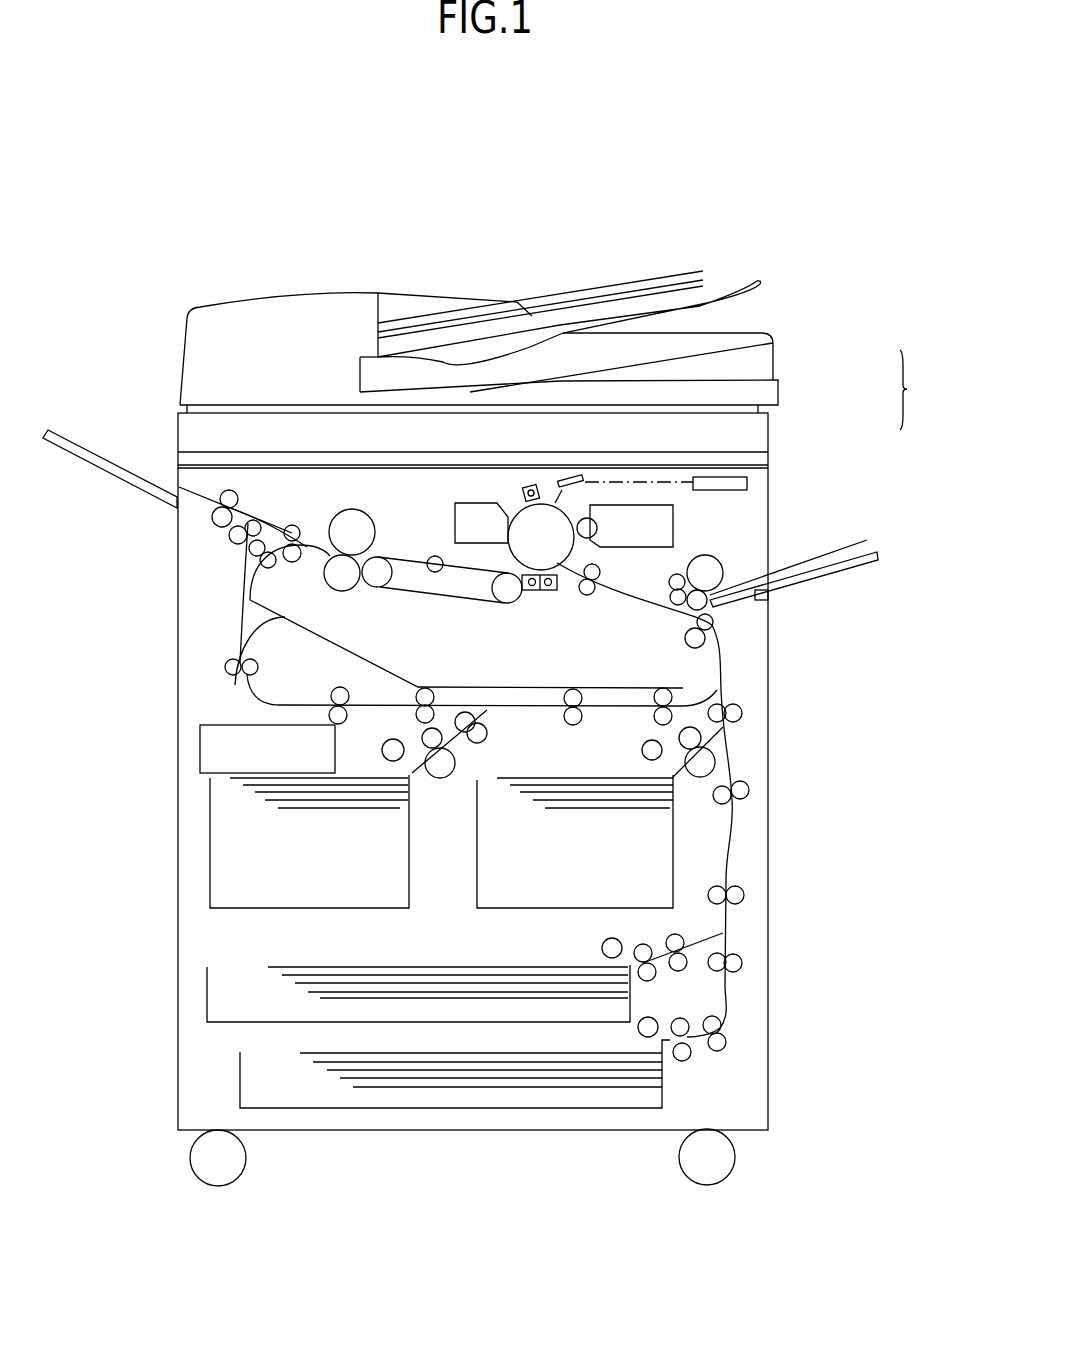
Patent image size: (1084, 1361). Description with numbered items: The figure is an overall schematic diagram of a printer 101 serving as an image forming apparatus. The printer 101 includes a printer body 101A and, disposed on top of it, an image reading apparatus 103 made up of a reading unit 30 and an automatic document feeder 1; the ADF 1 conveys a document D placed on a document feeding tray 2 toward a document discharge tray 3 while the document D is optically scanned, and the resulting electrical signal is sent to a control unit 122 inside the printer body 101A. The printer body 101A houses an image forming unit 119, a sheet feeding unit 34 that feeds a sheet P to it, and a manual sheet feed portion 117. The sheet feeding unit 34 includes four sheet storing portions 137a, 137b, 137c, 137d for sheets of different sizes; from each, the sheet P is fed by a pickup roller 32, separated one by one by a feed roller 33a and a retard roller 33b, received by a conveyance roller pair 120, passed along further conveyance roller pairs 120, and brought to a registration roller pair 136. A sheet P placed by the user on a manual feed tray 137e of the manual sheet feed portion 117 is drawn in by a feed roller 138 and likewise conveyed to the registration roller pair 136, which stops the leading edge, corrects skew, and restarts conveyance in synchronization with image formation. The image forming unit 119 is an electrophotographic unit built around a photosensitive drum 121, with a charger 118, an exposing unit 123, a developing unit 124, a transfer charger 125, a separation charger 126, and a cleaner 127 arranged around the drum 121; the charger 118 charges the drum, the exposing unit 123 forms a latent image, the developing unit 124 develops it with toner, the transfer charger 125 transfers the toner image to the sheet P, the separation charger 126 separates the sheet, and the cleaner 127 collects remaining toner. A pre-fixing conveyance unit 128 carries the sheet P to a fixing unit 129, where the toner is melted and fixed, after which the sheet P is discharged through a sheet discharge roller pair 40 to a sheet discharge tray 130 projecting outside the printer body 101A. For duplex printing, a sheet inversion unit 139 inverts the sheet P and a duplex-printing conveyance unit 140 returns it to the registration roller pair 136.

The printer 101 is at (428, 195).
The printer body 101A is at (790, 492).
The automatic document feeder (ADF) 1 is at (797, 355).
The document feeding tray 2 is at (747, 280).
The document discharge tray 3 is at (750, 331).
The document D is at (665, 280).
The reading unit 30 is at (795, 425).
The image reading apparatus 103 is at (925, 390).
The sheet discharge tray 130 is at (72, 457).
The sheet discharge roller pair 40 is at (222, 527).
The charger 118 is at (535, 484).
The exposing unit 123 is at (747, 481).
The manual sheet feed portion 117 is at (850, 528).
The manual feed tray 137e is at (845, 567).
The fixing unit 129 is at (340, 523).
The cleaner 127 is at (453, 523).
The photosensitive drum 121 is at (513, 510).
The developing unit 124 is at (660, 528).
The feed roller 138 is at (713, 566).
The image forming unit 119 is at (498, 567).
The pre-fixing conveyance unit 128 is at (445, 570).
The sheet inversion unit 139 is at (345, 634).
The duplex-printing conveyance unit 140 is at (222, 685).
The separation charger 126 is at (533, 593).
The transfer charger 125 is at (557, 593).
The registration roller pair 136 is at (595, 593).
The sheet feeding unit 34 is at (742, 688).
The control unit 122 is at (200, 742).
The conveyance roller pair 120 is at (483, 732).
The pickup roller 32 is at (382, 750).
The feed roller 33a is at (423, 730).
The retard roller 33b is at (448, 776).
The sheet P is at (543, 775).
The sheet storing portion 137a is at (240, 1082).
The sheet storing portion 137b is at (207, 998).
The sheet storing portion 137c is at (210, 850).
The sheet storing portion 137d is at (675, 847).